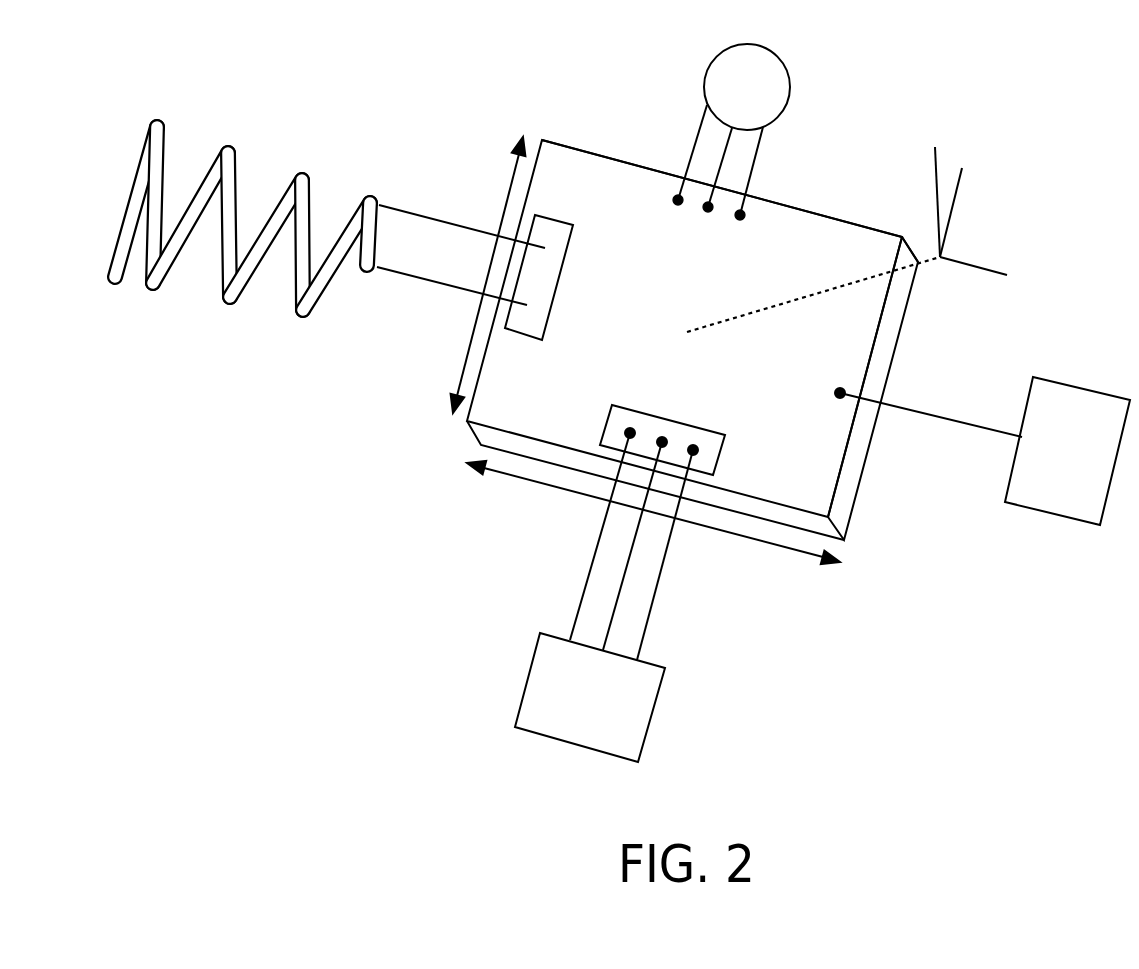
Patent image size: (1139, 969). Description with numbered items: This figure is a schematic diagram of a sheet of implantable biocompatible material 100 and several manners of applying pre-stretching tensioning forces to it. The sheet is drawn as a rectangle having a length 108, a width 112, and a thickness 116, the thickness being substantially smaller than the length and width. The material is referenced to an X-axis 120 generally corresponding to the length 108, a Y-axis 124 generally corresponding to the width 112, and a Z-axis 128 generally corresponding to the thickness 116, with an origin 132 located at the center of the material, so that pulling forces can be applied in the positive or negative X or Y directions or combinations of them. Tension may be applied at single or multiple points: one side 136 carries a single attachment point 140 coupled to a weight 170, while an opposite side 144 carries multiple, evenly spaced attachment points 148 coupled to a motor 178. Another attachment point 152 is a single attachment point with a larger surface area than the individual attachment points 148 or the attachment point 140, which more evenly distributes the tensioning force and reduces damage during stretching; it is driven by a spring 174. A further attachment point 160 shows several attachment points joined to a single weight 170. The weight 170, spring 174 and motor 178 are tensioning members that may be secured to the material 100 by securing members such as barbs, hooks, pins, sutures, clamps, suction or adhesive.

The implantable biocompatible material 100 is at (571, 163).
The length 108 is at (773, 545).
The width 112 is at (470, 340).
The thickness 116 is at (923, 242).
The X-axis 120 is at (973, 284).
The Y-axis 124 is at (979, 212).
The Z-axis 128 is at (906, 202).
The origin 132 is at (687, 332).
The side 136 is at (880, 347).
The attachment point 140 is at (840, 391).
The side 144 is at (768, 194).
The attachment points 148 is at (676, 200).
The attachment point 152 is at (553, 266).
The attachment point 160 is at (652, 422).
The weight 170 is at (1073, 520).
The spring 174 is at (221, 287).
The motor 178 is at (770, 66).